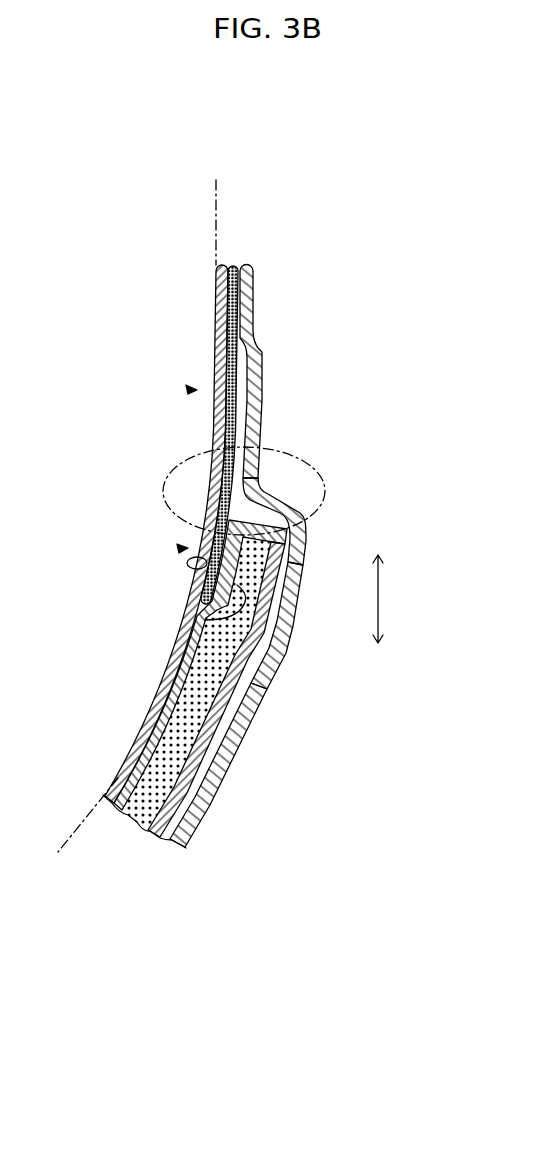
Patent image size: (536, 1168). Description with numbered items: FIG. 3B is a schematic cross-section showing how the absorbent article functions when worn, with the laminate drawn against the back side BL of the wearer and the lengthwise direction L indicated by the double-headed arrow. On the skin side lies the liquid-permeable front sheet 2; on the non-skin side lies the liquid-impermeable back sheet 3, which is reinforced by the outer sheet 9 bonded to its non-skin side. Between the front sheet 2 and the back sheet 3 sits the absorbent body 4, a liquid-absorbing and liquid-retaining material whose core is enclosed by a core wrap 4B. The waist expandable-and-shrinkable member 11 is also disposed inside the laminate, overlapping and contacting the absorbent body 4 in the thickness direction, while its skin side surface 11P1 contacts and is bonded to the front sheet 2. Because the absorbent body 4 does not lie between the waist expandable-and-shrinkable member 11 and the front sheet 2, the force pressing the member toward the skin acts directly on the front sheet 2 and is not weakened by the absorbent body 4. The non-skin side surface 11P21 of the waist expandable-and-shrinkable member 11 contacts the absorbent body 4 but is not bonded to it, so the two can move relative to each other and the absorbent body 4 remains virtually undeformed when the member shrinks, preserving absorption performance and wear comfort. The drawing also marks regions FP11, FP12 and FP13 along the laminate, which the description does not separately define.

The front sheet 2 is at (97, 822).
The back sheet 3 is at (176, 842).
The absorbent body 4 is at (139, 823).
The core wrap 4B is at (293, 603).
The outer sheet 9 is at (204, 815).
The waist expandable-and-shrinkable member 11 is at (275, 360).
The skin side surface 11P1 is at (280, 560).
The non-skin side surface 11P21 is at (197, 618).
The first fixing portion FP11 is at (190, 389).
The second fixing portion FP12 is at (180, 548).
The third fixing portion FP13 is at (320, 450).
The back side of the wearer BL is at (216, 190).
The lengthwise direction L is at (392, 596).